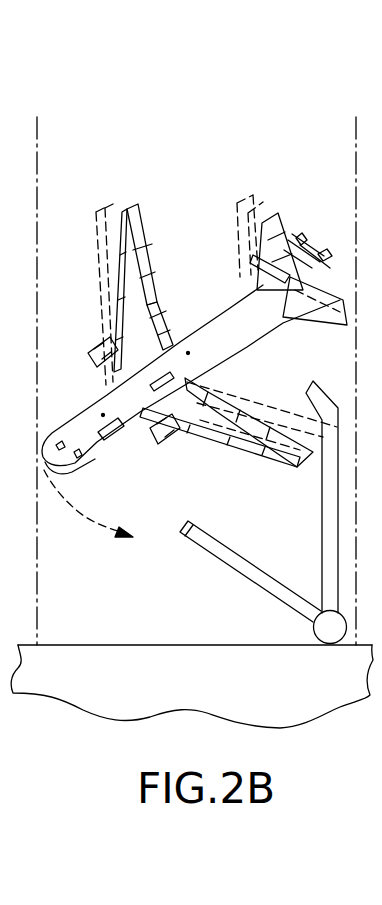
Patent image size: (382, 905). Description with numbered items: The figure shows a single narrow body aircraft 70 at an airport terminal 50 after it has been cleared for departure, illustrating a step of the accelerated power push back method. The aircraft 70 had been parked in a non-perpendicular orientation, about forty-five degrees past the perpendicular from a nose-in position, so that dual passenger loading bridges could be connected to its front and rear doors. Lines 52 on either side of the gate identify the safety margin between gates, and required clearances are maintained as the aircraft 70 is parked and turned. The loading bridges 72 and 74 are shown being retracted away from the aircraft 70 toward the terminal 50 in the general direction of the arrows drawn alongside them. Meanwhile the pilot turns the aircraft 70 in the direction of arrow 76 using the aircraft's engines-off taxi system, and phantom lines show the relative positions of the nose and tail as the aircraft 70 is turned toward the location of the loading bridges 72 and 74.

The airport terminal 50 is at (72, 644).
The lines 52 is at (37, 188).
The narrow body aircraft 70 is at (75, 380).
The loading bridge 72 is at (267, 614).
The loading bridge 74 is at (323, 502).
The arrow 76 is at (92, 520).